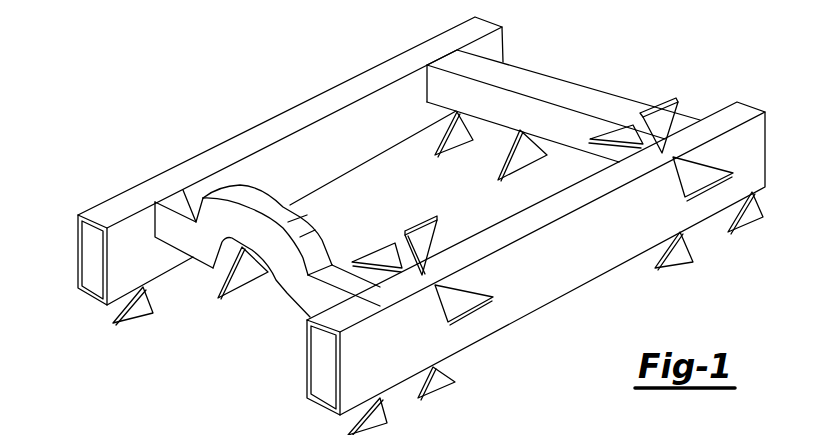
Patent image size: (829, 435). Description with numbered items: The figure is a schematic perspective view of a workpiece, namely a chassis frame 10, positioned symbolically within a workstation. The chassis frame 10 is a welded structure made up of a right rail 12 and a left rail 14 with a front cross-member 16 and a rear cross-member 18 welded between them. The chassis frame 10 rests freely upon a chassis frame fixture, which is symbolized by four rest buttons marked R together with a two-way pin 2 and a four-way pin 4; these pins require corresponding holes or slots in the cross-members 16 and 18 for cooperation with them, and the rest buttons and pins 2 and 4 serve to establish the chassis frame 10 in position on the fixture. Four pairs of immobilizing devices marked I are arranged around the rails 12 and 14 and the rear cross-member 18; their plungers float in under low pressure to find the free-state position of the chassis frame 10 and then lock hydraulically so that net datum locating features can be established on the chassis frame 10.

The chassis frame 10 is at (236, 111).
The right rail 12 is at (357, 367).
The left rail 14 is at (122, 257).
The front cross-member 16 is at (292, 293).
The rear cross-member 18 is at (578, 93).
The two-way pin 2 is at (243, 273).
The four-way pin 4 is at (522, 155).